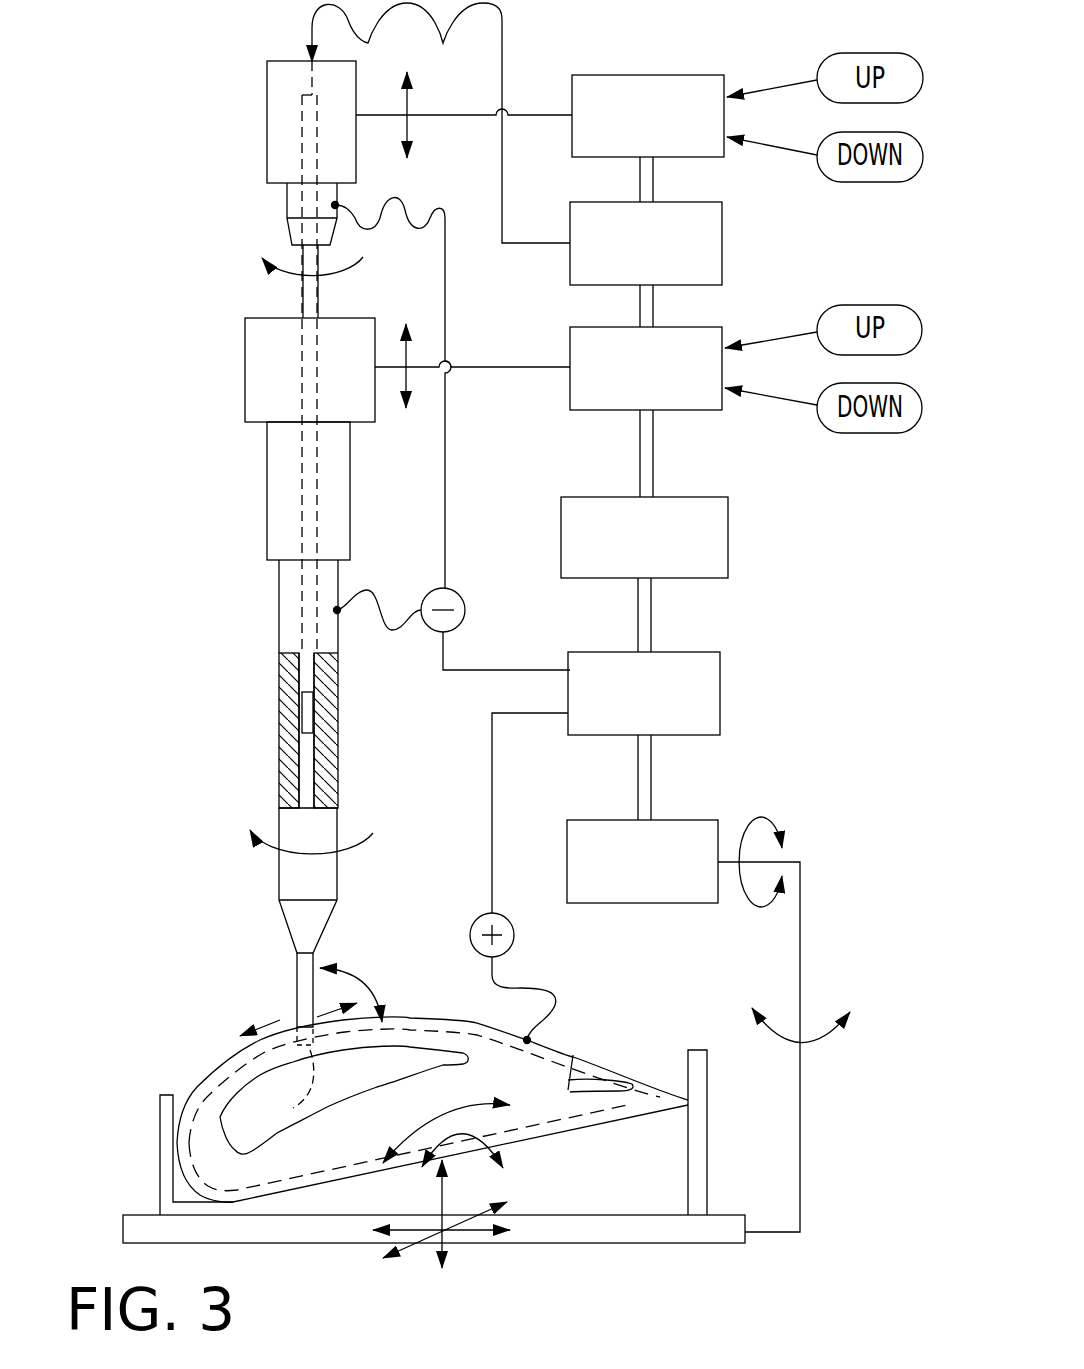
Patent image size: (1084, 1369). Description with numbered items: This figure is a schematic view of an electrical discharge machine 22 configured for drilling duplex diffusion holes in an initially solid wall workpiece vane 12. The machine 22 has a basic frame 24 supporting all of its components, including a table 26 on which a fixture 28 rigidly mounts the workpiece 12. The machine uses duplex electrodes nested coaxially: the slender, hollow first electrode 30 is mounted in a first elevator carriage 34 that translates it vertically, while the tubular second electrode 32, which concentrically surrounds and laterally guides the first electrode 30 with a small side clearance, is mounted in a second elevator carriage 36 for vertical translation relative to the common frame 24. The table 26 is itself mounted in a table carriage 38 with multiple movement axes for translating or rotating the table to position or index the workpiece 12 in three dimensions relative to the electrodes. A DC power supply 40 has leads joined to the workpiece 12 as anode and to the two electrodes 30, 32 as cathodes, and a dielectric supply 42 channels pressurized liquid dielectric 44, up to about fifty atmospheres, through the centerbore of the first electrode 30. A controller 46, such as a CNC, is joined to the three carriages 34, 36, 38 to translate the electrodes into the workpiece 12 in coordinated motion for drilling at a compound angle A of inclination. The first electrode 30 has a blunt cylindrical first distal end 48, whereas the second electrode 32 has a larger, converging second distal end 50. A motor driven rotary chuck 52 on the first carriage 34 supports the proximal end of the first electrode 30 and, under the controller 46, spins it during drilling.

The workpiece vane 12 is at (193, 1090).
The electrical discharge machine 22 is at (519, 458).
The frame 24 is at (651, 775).
The table 26 is at (142, 1213).
The fixture 28 is at (647, 1181).
The first EDM electrode 30 is at (303, 778).
The second EDM electrode 32 is at (280, 686).
The first elevator carriage 34 is at (647, 75).
The second elevator carriage 36 is at (685, 410).
The table carriage 38 is at (642, 903).
The DC power supply 40 is at (683, 652).
The dielectric supply 42 is at (722, 242).
The liquid dielectric 44 is at (503, 55).
The controller 46 is at (728, 538).
The first distal end 48 is at (292, 1106).
The second distal end 50 is at (330, 920).
The rotary chuck 52 is at (287, 200).
The compound angle of inclination A is at (378, 975).